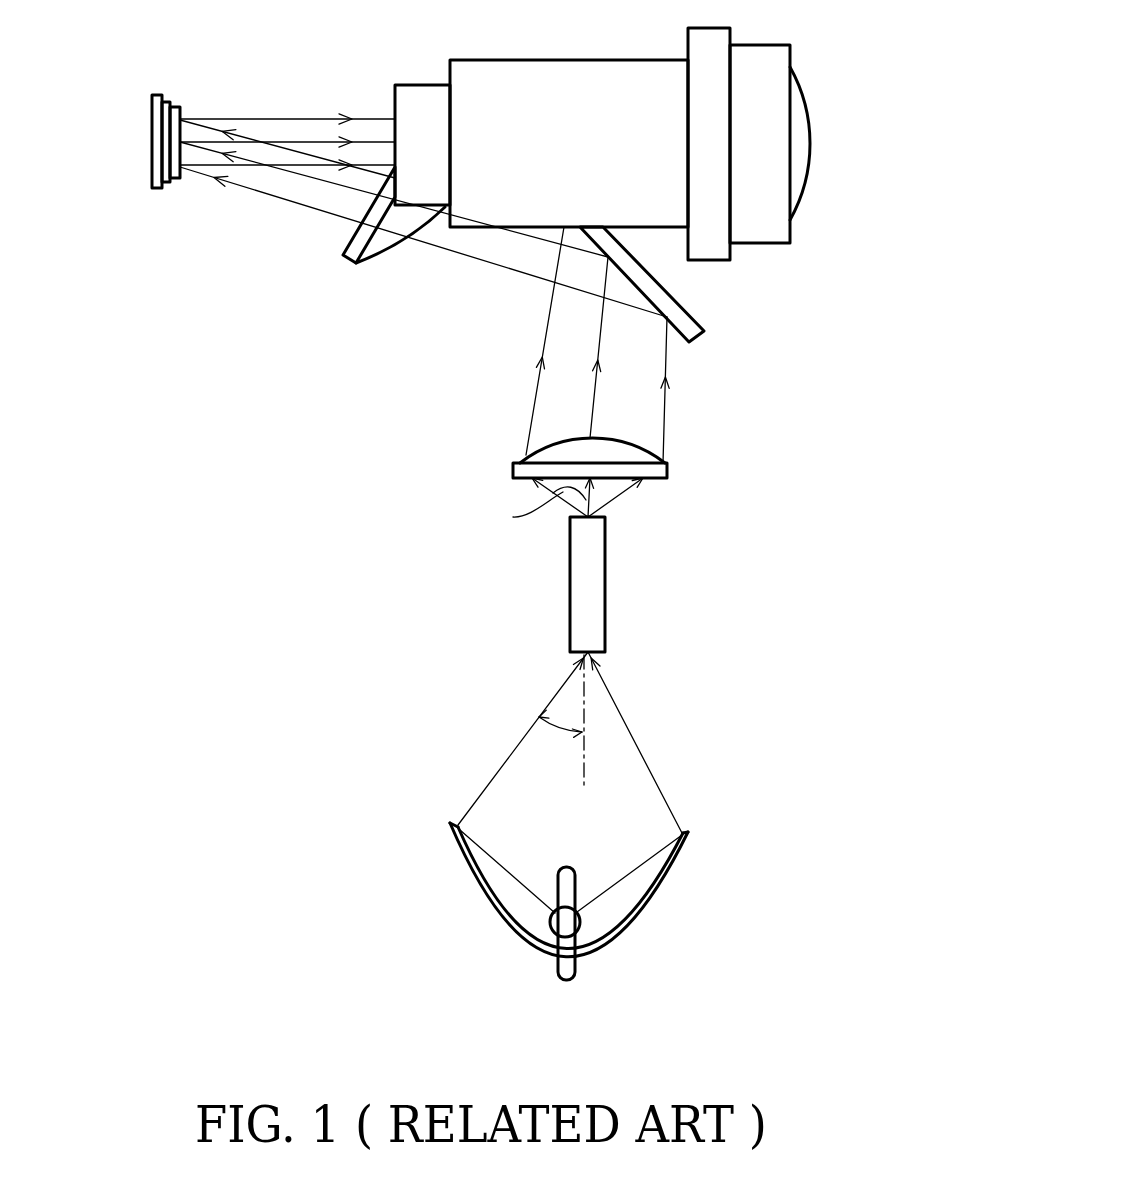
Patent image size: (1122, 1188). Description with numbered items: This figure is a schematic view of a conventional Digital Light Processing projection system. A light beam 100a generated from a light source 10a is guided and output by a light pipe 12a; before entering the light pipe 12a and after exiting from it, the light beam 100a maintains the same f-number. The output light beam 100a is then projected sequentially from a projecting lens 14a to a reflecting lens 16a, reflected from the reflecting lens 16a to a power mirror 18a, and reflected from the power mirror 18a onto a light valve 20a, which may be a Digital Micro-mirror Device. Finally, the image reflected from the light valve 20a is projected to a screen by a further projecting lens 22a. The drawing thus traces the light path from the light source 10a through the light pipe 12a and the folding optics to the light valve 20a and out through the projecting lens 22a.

The light beam 100a is at (479, 504).
The light source 10a is at (643, 913).
The light pipe 12a is at (605, 583).
The projecting lens 14a is at (670, 472).
The reflecting lens 16a is at (680, 298).
The power mirror 18a is at (343, 257).
The light valve 20a is at (152, 145).
The projecting lens 22a is at (810, 143).